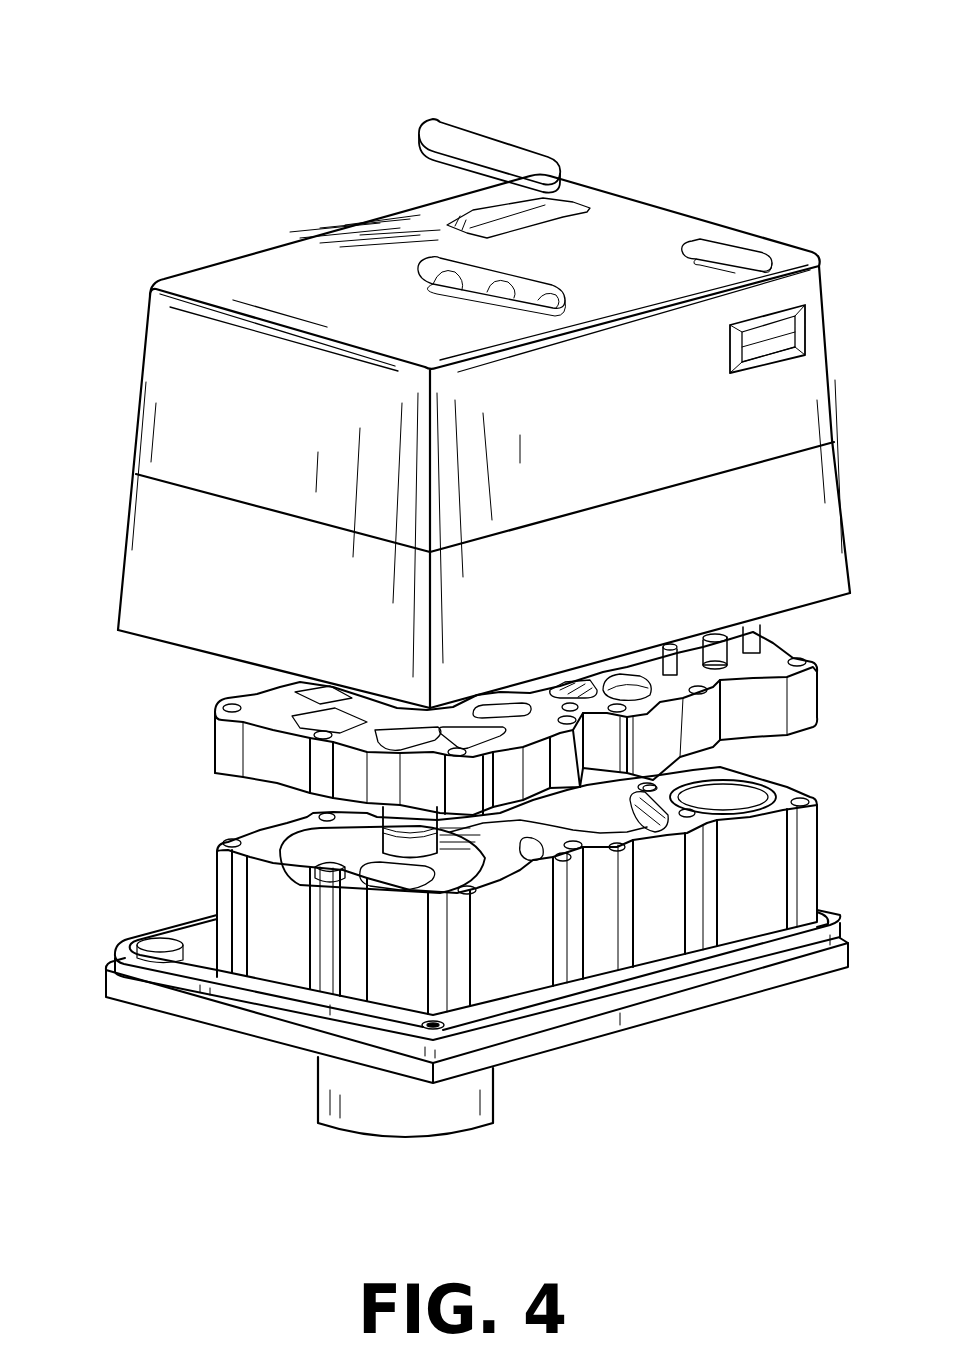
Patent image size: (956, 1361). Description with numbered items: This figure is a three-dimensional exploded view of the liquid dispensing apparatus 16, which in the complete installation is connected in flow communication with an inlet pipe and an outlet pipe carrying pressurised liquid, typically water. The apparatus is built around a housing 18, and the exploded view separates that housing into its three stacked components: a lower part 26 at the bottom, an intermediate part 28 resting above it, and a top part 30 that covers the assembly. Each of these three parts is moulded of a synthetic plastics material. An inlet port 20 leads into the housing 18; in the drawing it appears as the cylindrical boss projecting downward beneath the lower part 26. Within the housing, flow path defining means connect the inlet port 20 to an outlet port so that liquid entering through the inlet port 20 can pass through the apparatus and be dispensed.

The liquid dispensing apparatus 16 is at (218, 78).
The housing 18 is at (135, 290).
The inlet port 20 is at (478, 1140).
The lower part 26 is at (147, 1004).
The intermediate part 28 is at (222, 743).
The top part 30 is at (126, 538).